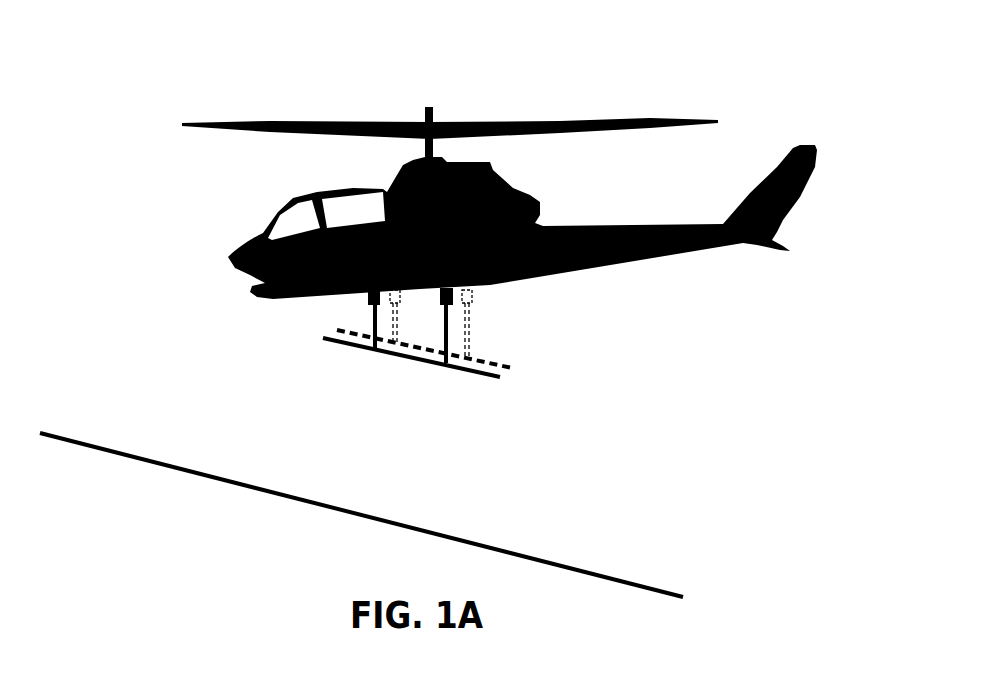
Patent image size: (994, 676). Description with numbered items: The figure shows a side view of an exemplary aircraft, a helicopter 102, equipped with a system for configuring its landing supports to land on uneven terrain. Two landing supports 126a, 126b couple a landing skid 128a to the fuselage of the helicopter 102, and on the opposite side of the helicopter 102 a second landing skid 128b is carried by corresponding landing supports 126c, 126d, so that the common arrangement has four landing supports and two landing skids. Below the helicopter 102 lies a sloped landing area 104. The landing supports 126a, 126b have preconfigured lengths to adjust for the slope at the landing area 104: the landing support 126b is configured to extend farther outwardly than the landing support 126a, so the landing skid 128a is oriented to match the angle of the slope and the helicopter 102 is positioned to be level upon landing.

The helicopter 102 is at (535, 64).
The landing area 104 is at (400, 507).
The landing support 126a is at (372, 313).
The landing support 126b is at (453, 342).
The landing support 126c is at (398, 330).
The landing support 126d is at (468, 308).
The landing skid 128a is at (340, 343).
The landing skid 128b is at (503, 365).